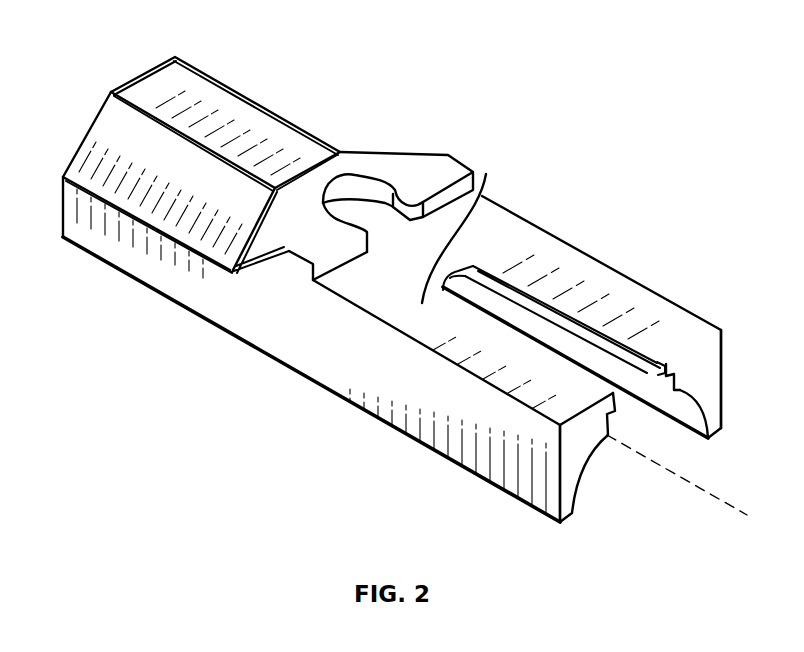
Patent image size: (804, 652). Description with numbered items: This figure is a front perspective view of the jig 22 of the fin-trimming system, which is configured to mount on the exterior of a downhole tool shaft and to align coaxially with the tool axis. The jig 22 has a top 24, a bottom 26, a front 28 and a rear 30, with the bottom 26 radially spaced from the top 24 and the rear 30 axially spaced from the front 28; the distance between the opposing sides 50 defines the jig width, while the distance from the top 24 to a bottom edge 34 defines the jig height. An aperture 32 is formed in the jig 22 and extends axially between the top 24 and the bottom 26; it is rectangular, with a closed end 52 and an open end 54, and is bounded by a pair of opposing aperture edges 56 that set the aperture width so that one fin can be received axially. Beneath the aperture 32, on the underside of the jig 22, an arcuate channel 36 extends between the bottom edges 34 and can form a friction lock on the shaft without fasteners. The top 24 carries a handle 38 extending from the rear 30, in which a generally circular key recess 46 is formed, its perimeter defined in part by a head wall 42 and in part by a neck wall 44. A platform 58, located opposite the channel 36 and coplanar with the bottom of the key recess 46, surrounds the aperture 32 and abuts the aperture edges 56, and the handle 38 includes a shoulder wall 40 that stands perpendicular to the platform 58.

The jig 22 is at (540, 104).
The top 24 is at (203, 91).
The bottom 26 is at (464, 469).
The front 28 is at (702, 372).
The rear 30 is at (92, 131).
The aperture 32 is at (538, 302).
The bottom edges 34 is at (567, 517).
The channel 36 is at (606, 368).
The handle 38 is at (280, 128).
The shoulder wall 40 is at (335, 262).
The head wall 42 is at (353, 183).
The neck wall 44 is at (399, 193).
The key recess 46 is at (327, 222).
The opposing sides 50 is at (391, 373).
The closed end 52 is at (473, 273).
The open end 54 is at (667, 377).
The aperture edges 56 is at (580, 352).
The platform 58 is at (463, 226).